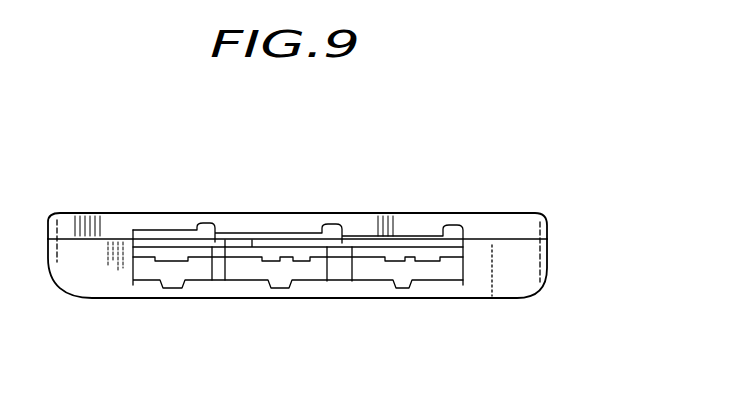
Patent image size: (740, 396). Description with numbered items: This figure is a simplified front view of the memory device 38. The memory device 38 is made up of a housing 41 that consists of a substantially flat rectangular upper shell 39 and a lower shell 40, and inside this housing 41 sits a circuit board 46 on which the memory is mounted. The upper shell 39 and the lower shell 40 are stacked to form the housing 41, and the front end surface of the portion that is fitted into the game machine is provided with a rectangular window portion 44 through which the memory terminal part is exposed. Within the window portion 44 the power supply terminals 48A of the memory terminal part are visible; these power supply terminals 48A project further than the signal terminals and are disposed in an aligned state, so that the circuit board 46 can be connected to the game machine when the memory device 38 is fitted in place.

The memory device 38 is at (316, 229).
The upper shell 39 is at (525, 228).
The lower shell 40 is at (522, 280).
The housing 41 is at (364, 239).
The window portion 44 is at (436, 275).
The circuit board 46 is at (439, 242).
The power supply terminals 48A is at (137, 266).